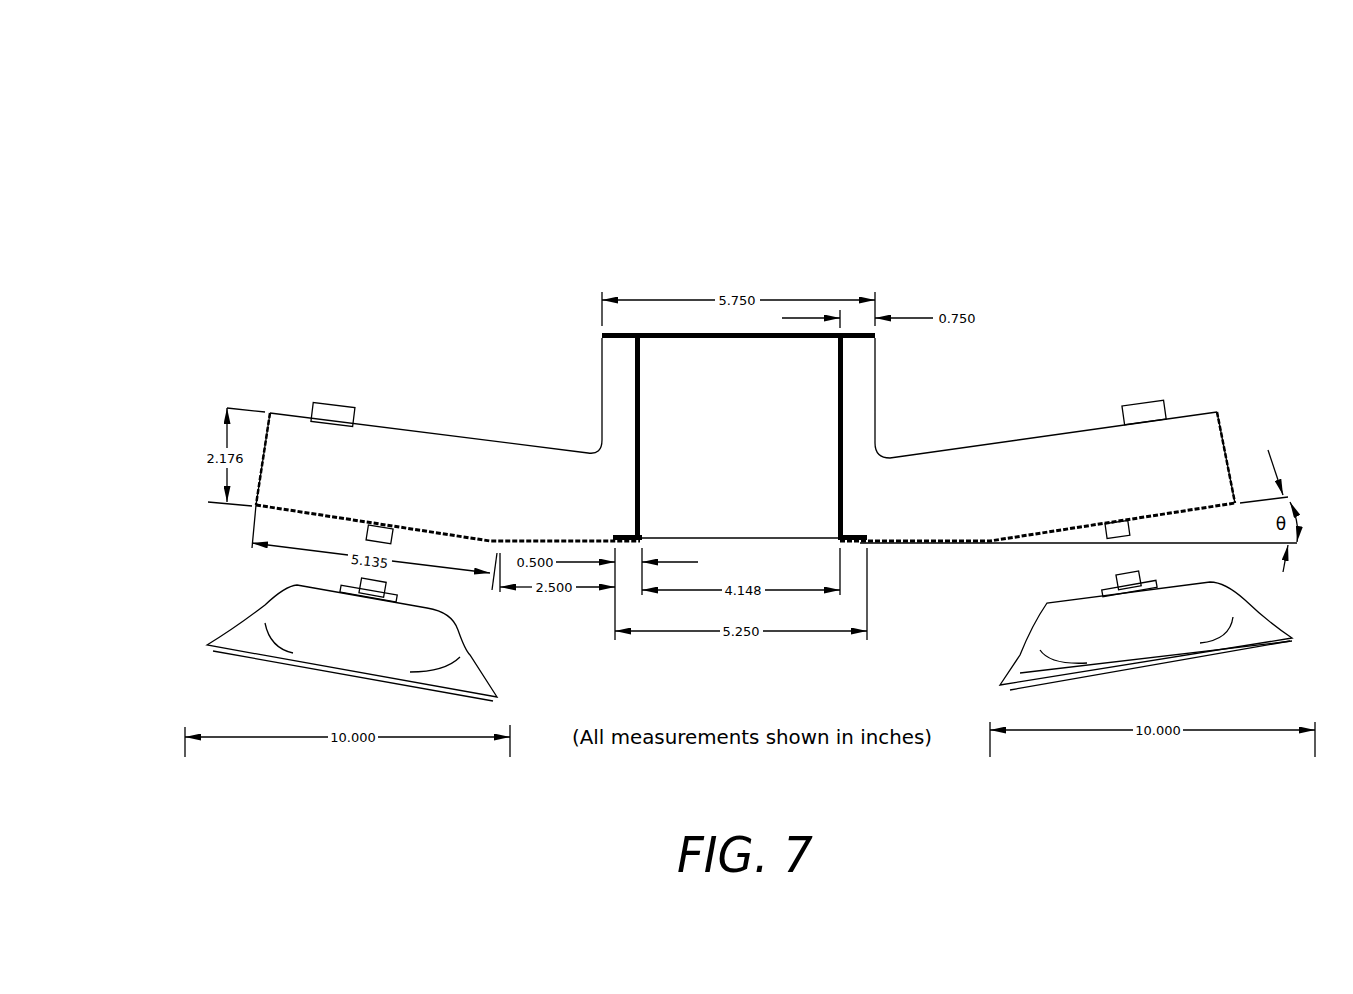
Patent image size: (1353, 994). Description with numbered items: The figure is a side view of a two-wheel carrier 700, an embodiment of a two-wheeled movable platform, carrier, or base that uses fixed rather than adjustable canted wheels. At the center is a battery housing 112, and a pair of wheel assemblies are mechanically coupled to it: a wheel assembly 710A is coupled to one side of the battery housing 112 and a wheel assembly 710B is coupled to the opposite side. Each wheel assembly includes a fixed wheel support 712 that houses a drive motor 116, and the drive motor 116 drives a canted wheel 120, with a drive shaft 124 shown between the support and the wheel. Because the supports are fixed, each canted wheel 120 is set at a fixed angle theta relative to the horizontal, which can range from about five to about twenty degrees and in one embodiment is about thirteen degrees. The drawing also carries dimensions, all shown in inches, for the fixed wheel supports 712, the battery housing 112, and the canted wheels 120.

The two-wheel carrier 700 is at (484, 128).
The wheel assembly 710A is at (1070, 320).
The wheel assembly 710B is at (431, 320).
The drive motor 116 is at (333, 406).
The battery housing 112 is at (795, 444).
The fixed wheel support 712 is at (578, 501).
The drive shaft 124 is at (393, 541).
The canted wheel 120 is at (1191, 646).